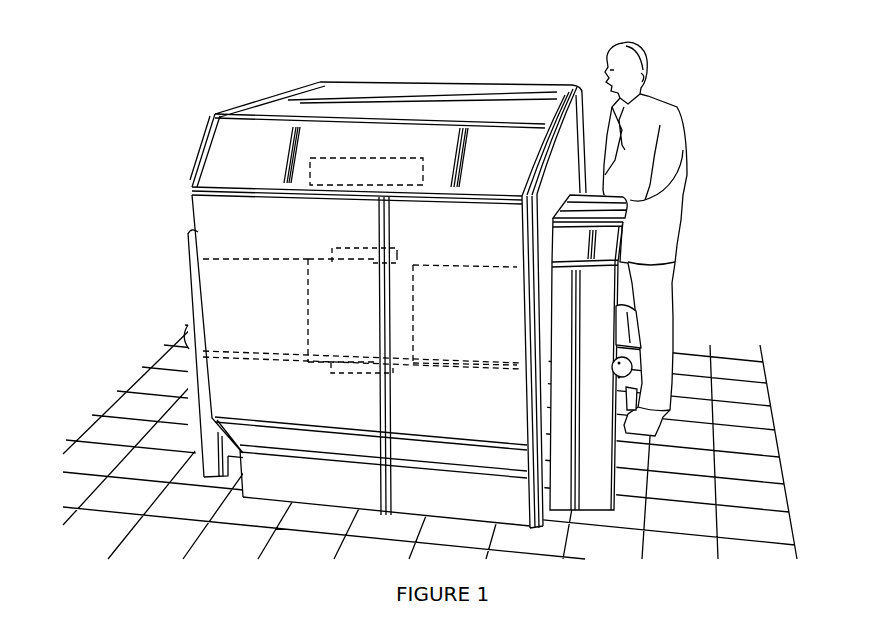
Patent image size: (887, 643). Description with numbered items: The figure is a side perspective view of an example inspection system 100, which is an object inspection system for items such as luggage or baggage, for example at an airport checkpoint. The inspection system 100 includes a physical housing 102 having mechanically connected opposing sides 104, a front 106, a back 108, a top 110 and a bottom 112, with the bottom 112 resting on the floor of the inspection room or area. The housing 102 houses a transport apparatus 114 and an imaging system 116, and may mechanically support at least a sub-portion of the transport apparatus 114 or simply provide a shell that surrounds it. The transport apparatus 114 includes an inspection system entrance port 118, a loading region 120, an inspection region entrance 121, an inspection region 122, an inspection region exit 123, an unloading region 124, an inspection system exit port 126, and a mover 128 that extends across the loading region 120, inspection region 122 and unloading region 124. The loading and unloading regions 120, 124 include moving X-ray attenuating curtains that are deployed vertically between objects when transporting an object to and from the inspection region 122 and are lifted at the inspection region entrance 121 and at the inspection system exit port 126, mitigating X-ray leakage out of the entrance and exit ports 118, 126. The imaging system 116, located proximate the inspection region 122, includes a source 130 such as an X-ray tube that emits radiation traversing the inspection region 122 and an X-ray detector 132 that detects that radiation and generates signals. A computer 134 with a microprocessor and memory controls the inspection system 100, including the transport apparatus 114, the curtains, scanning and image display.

The inspection system 100 is at (430, 288).
The physical housing 102 is at (223, 113).
The opposing sides 104 is at (424, 66).
The front 106 is at (697, 220).
The back 108 is at (168, 142).
The top 110 is at (351, 300).
The bottom 112 is at (326, 526).
The transport apparatus 114 is at (450, 388).
The imaging system 116 is at (408, 240).
The inspection system entrance port 118 is at (504, 330).
The loading region 120 is at (515, 268).
The inspection region entrance 121 is at (426, 294).
The inspection region 122 is at (318, 259).
The inspection region exit 123 is at (291, 286).
The unloading region 124 is at (252, 258).
The inspection system exit port 126 is at (216, 310).
The mover 128 is at (228, 350).
The source 130 is at (358, 259).
The X-ray detector 132 is at (352, 373).
The computer 134 is at (370, 160).